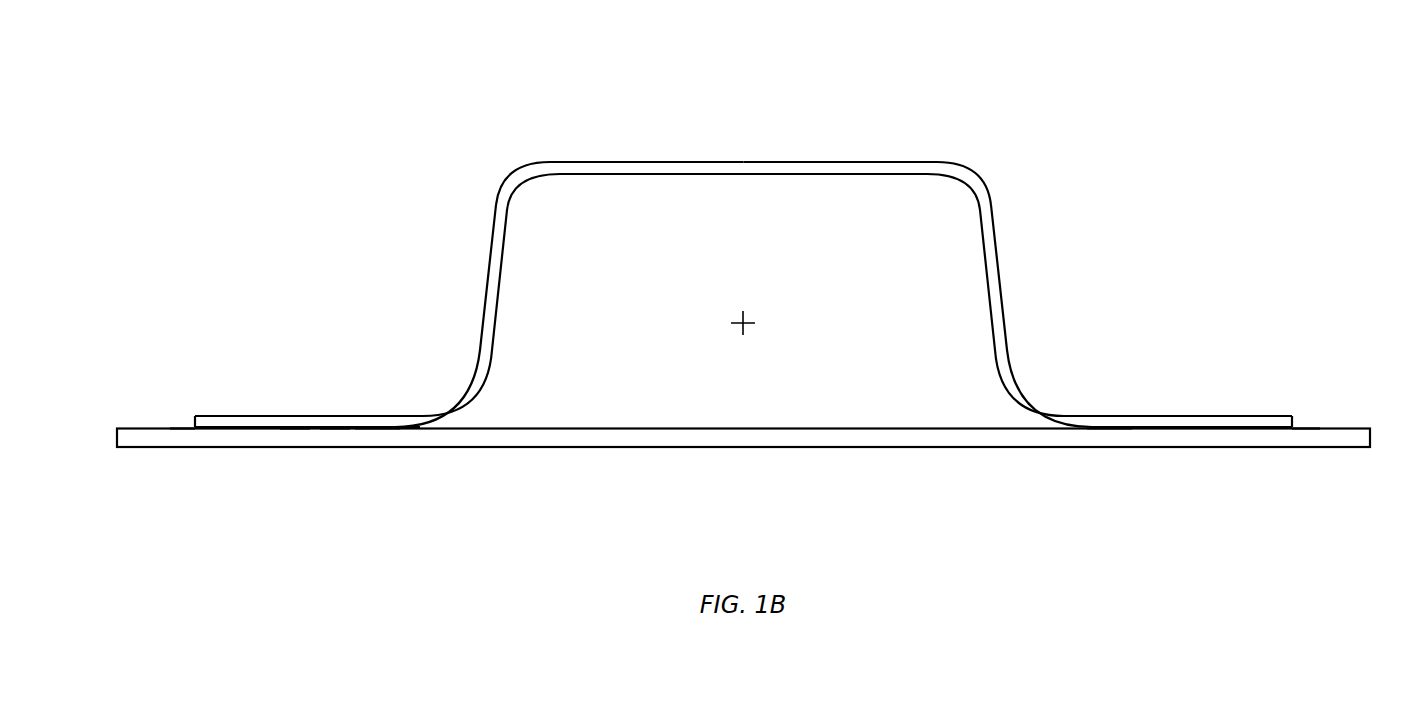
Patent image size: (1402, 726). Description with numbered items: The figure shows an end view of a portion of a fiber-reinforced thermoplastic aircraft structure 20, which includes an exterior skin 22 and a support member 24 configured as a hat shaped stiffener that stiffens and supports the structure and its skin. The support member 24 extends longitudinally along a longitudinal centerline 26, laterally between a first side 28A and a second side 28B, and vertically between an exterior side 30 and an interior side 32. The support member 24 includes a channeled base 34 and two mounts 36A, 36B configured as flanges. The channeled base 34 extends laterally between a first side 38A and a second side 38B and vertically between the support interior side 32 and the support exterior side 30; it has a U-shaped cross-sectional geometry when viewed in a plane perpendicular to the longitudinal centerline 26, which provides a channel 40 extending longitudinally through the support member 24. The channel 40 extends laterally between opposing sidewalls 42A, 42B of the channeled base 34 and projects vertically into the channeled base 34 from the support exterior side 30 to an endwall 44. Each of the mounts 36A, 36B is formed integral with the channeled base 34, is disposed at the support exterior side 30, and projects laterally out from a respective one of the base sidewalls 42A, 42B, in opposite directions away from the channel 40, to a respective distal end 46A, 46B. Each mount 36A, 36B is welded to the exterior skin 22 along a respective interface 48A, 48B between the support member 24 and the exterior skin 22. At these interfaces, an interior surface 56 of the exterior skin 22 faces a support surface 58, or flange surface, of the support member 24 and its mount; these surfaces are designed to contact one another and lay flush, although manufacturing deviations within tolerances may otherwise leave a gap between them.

The aircraft structure 20 is at (1014, 98).
The exterior skin 22 is at (515, 458).
The support member 24 is at (997, 172).
The longitudinal centerline 26 is at (745, 326).
The first side 28A is at (193, 424).
The second side 28B is at (1294, 424).
The exterior side 30 is at (294, 430).
The interior side 32 is at (728, 161).
The channeled base 34 is at (519, 162).
The first mount 36A is at (287, 414).
The second mount 36B is at (1198, 414).
The first side of the channeled base 38A is at (477, 312).
The second side of the channeled base 38B is at (1008, 310).
The channel 40 is at (692, 270).
The first sidewall 42A is at (497, 283).
The second sidewall 42B is at (988, 283).
The endwall 44 is at (788, 175).
The distal end of first mount 46A is at (183, 430).
The distal end of second mount 46B is at (1305, 430).
The first interface 48A is at (371, 433).
The second interface 48B is at (1116, 433).
The interior surface 56 is at (353, 427).
The support surface 58 is at (336, 430).